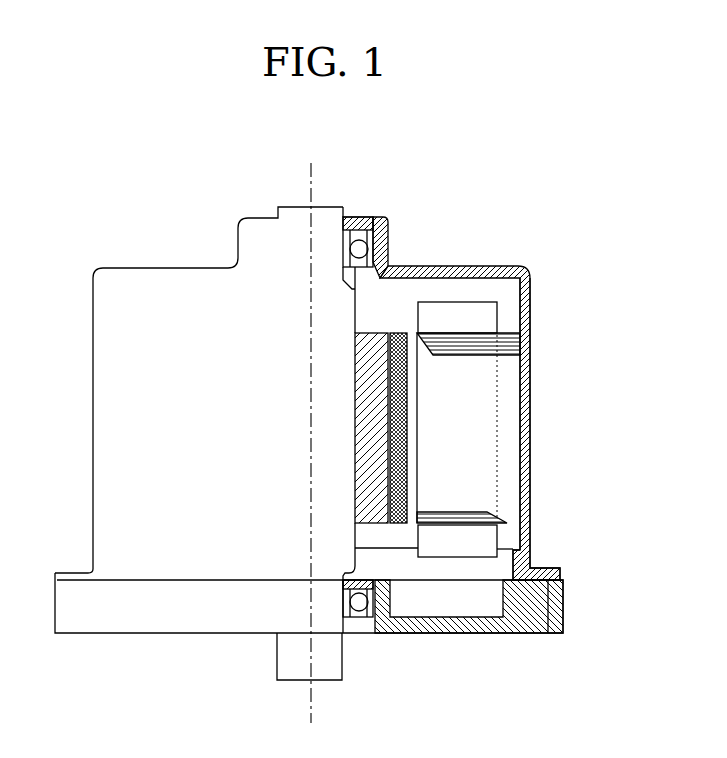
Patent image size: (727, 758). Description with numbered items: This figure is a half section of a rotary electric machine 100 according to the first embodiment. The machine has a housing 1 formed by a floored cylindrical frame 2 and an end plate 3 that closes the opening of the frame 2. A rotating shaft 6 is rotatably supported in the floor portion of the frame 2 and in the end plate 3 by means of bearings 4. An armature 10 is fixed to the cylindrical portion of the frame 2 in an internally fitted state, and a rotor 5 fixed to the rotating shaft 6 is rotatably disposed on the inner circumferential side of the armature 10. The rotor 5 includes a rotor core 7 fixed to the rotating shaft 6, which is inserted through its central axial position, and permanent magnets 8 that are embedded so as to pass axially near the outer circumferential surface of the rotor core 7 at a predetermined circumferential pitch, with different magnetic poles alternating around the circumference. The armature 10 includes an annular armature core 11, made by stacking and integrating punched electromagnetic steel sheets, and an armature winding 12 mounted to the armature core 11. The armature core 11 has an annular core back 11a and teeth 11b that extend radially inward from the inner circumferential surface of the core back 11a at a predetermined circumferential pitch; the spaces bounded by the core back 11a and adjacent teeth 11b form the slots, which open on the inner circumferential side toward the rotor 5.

The rotary electric machine 100 is at (103, 115).
The housing 1 is at (27, 486).
The frame 2 is at (112, 488).
The end plate 3 is at (108, 591).
The bearings 4 is at (385, 240).
The rotor 5 is at (405, 332).
The rotating shaft 6 is at (342, 670).
The rotor core 7 is at (417, 463).
The permanent magnets 8 is at (400, 425).
The armature 10 is at (590, 300).
The armature core 11 is at (504, 379).
The core back 11a is at (508, 504).
The teeth 11b is at (462, 480).
The armature winding 12 is at (497, 321).